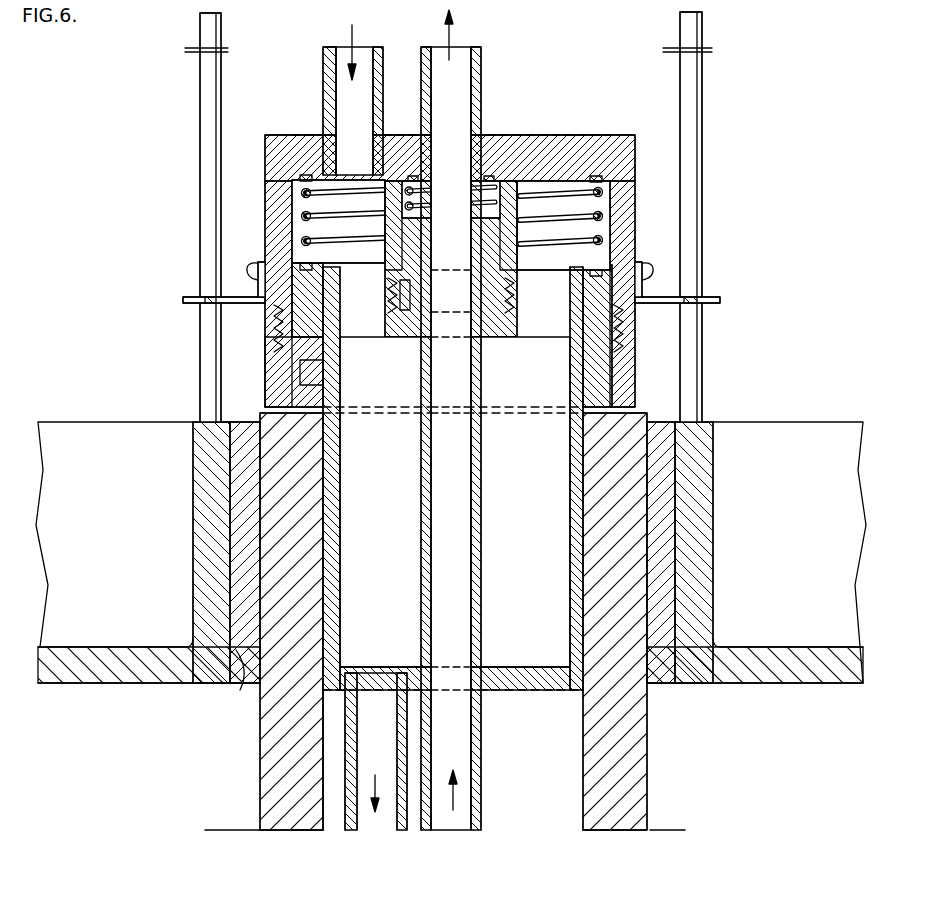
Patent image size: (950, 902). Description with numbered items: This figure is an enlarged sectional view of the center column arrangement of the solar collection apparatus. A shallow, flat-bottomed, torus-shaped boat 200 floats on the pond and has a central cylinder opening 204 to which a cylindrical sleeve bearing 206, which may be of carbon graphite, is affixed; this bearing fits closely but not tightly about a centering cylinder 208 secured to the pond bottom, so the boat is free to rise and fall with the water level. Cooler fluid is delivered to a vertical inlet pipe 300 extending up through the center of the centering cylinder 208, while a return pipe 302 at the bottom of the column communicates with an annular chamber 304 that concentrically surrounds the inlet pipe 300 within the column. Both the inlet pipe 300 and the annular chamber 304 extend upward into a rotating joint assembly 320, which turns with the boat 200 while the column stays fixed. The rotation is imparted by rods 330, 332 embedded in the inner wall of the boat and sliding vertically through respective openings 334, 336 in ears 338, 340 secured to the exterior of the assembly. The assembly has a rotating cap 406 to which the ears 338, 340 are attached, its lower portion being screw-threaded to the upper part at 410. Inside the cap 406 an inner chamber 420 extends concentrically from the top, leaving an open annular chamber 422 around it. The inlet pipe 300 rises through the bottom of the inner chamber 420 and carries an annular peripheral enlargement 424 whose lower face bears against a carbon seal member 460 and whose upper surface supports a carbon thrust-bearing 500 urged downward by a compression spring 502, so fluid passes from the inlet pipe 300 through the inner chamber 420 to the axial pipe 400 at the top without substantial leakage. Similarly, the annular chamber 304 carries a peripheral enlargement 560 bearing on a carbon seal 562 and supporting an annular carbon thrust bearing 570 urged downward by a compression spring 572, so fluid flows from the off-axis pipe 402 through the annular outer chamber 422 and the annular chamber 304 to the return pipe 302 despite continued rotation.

The boat 200 is at (98, 678).
The central cylinder opening 204 is at (240, 690).
The cylindrical sleeve bearing 206 is at (237, 505).
The centering cylinder 208 is at (740, 757).
The inlet pipe 300 is at (484, 745).
The pipe 302 is at (348, 812).
The annular chamber 304 is at (343, 553).
The rotating joint assembly 320 is at (609, 130).
The rod 330 is at (704, 248).
The rod 332 is at (205, 224).
The opening 334 is at (703, 308).
The bracket 336 is at (212, 308).
The ear 338 is at (658, 290).
The ear 340 is at (238, 290).
The pipe 400 is at (478, 72).
The pipe 402 is at (325, 92).
The rotating cap 406 is at (628, 160).
The screw-threaded connection 410 is at (625, 330).
The inner chamber 420 is at (498, 180).
The annular chamber 422 is at (610, 212).
The annular peripheral enlargement 424 is at (400, 292).
The carbon seal member 460 is at (505, 312).
The carbon thrust-bearing 500 is at (505, 265).
The compression spring 502 is at (482, 178).
The peripheral enlargement 560 is at (282, 338).
The carbon seal 562 is at (300, 372).
The annular carbon thrust bearing 570 is at (308, 318).
The compression spring 572 is at (562, 195).